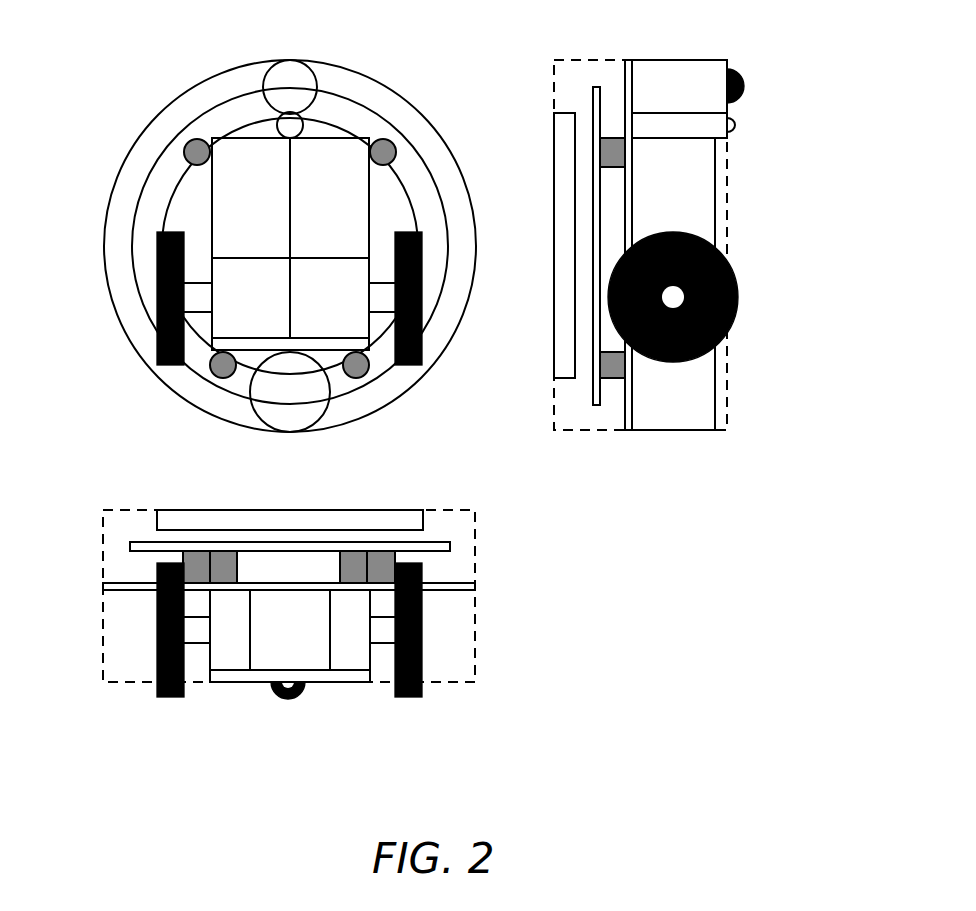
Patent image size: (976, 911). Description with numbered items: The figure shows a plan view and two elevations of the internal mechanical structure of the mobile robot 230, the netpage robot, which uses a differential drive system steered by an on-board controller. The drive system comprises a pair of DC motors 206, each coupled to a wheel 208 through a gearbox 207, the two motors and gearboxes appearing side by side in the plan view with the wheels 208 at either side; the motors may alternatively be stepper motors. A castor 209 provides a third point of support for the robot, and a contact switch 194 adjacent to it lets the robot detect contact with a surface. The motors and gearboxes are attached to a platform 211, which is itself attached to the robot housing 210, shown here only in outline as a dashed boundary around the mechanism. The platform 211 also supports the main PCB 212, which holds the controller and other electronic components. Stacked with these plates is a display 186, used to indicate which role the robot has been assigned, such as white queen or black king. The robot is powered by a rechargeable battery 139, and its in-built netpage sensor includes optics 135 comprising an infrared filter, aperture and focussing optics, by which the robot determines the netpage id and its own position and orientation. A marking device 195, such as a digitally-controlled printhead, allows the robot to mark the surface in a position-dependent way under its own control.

The mobile robot 230 is at (142, 56).
The platform 211 is at (109, 204).
The main PCB 212 is at (145, 172).
The display 186 is at (554, 371).
The robot housing 210 is at (477, 563).
The castor 209 is at (308, 84).
The contact switch 194 is at (280, 126).
The DC motor 206 is at (463, 284).
The gearbox 207 is at (290, 298).
The optics 135 is at (456, 511).
The rechargeable battery 139 is at (607, 186).
The marking device 195 is at (240, 378).
The wheel 208 is at (176, 368).